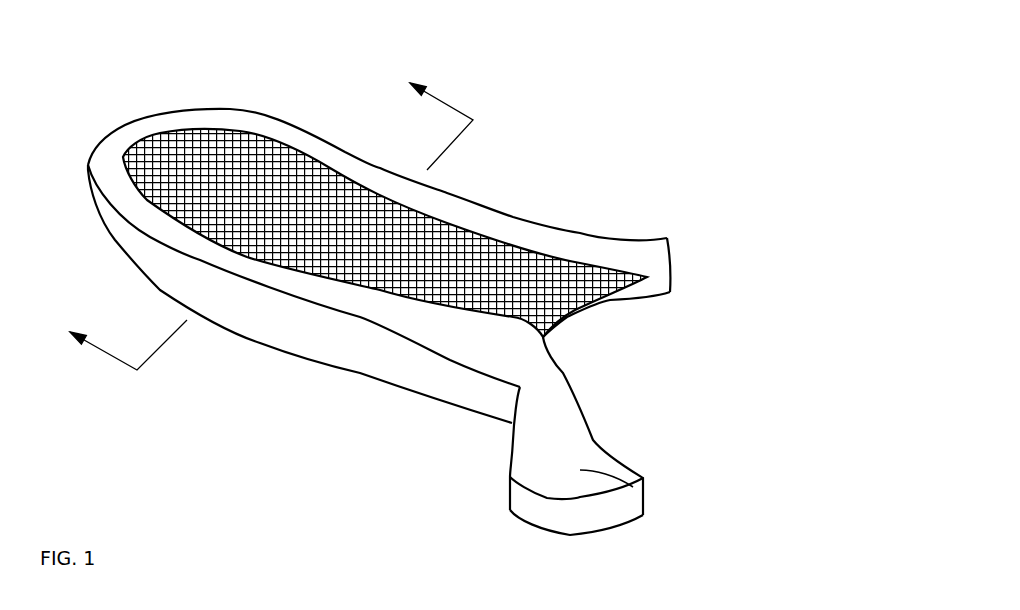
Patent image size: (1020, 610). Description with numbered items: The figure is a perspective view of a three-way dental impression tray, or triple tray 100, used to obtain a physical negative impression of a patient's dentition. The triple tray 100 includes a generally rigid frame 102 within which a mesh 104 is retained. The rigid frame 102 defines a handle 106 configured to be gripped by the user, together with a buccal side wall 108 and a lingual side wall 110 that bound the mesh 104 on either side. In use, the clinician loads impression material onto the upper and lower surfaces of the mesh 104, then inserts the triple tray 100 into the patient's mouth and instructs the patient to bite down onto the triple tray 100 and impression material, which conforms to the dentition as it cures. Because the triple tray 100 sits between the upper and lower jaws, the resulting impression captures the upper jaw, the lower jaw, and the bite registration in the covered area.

The triple tray 100 is at (573, 137).
The frame 102 is at (387, 360).
The mesh 104 is at (580, 307).
The handle 106 is at (643, 480).
The buccal side wall 108 is at (233, 263).
The lingual side wall 110 is at (246, 124).